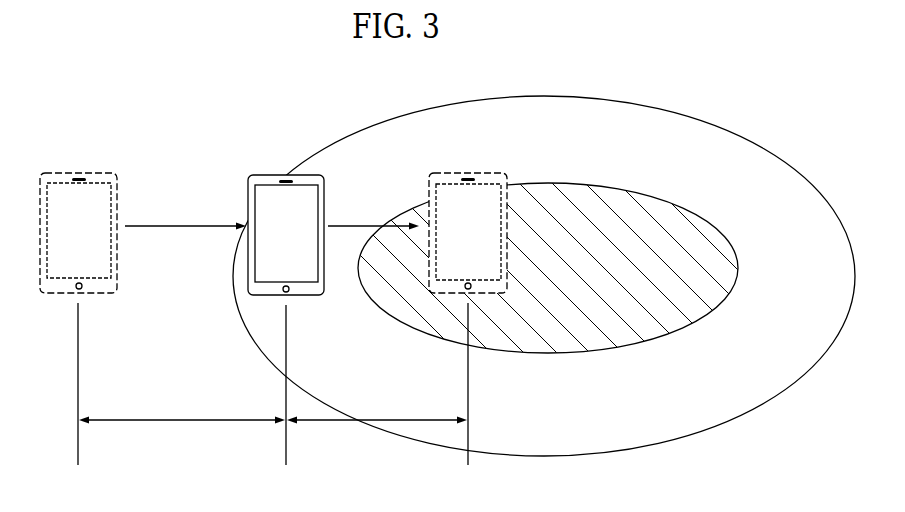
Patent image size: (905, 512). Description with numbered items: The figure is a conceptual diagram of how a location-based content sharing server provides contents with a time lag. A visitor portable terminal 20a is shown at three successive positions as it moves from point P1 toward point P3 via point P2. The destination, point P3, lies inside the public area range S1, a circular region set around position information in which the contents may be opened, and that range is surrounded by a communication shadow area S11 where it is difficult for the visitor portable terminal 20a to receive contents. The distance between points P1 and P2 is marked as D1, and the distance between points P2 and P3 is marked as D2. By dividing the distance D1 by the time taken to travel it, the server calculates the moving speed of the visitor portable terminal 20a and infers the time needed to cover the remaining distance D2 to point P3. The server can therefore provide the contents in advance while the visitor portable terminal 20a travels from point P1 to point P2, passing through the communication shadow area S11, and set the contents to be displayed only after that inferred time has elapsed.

The visitor portable terminal 20a is at (101, 181).
The public area range S1 is at (505, 250).
The communication shadow area S11 is at (544, 276).
The point P1 is at (78, 398).
The point P2 is at (287, 399).
The point P3 is at (468, 398).
The distance D1 is at (182, 436).
The second distance D2 is at (377, 434).